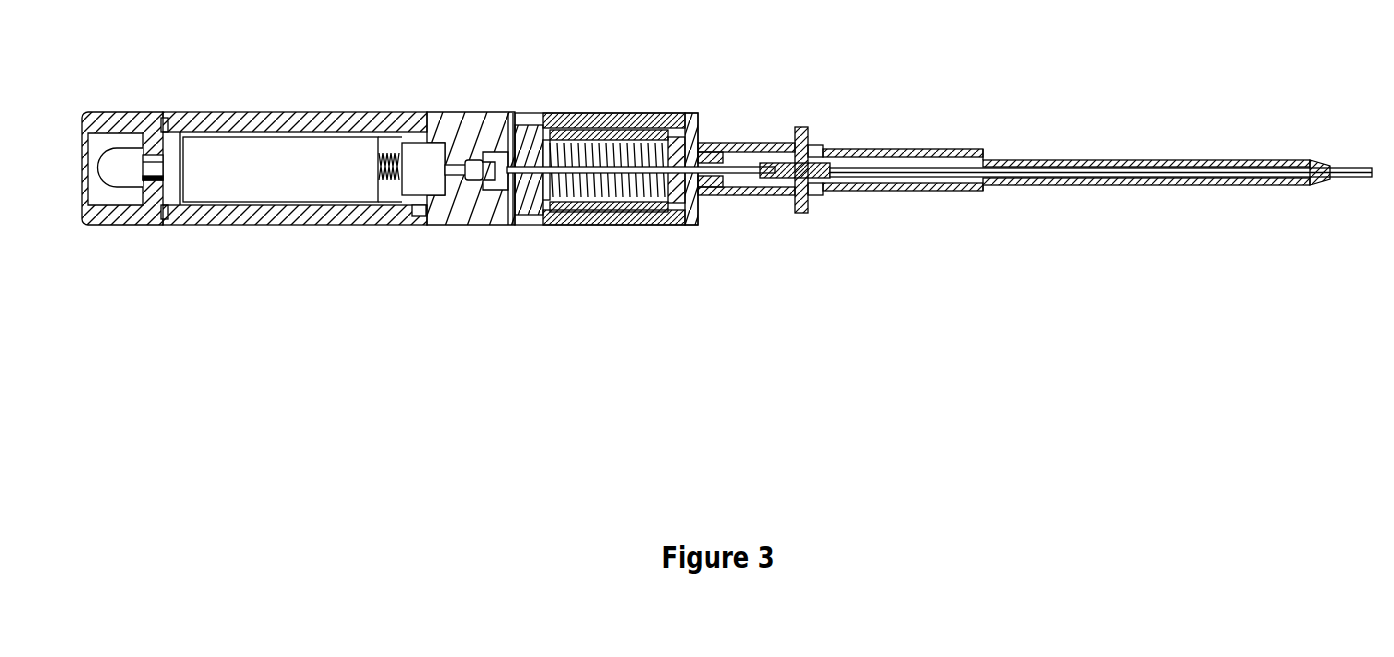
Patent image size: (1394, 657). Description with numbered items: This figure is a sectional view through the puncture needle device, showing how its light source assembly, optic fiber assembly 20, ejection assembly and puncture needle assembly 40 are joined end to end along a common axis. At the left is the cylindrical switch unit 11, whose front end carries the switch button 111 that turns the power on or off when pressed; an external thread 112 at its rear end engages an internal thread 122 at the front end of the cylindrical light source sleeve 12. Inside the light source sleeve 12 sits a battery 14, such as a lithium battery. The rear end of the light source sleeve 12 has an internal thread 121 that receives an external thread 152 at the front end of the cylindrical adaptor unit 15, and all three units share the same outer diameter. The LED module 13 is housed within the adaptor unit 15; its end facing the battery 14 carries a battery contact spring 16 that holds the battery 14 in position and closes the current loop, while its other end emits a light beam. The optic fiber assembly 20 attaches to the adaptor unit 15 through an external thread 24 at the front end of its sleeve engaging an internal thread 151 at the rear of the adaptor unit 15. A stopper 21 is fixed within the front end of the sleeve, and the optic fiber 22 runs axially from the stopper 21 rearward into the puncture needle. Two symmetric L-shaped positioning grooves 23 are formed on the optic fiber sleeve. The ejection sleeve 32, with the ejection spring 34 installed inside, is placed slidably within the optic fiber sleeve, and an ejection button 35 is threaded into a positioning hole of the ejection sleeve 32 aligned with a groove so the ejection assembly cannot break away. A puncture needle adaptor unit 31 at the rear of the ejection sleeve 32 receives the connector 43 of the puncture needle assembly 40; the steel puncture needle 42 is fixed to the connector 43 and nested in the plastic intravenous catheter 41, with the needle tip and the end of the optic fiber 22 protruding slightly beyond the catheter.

The switch unit 11 is at (125, 112).
The switch button 111 is at (112, 162).
The external thread 112 is at (164, 118).
The light source sleeve 12 is at (238, 112).
The internal thread 122 is at (172, 225).
The battery 14 is at (289, 153).
The battery contact spring 16 is at (388, 153).
The internal thread 121 is at (417, 135).
The adaptor unit 15 is at (462, 120).
The internal thread 151 is at (528, 150).
The external thread 152 is at (414, 214).
The LED module 13 is at (473, 177).
The optic fiber assembly 20 is at (647, 113).
The external thread 24 is at (518, 217).
The positioning groove 23 is at (597, 212).
The ejection spring 34 is at (638, 205).
The ejection sleeve 32 is at (672, 215).
The stopper 21 is at (545, 142).
The ejection button 35 is at (588, 112).
The optic fiber 22 is at (1360, 168).
The puncture needle adaptor unit 31 is at (717, 153).
The connector 43 is at (762, 145).
The intravenous catheter 41 is at (1047, 160).
The puncture needle 42 is at (1313, 163).
The puncture needle assembly 40 is at (1123, 138).